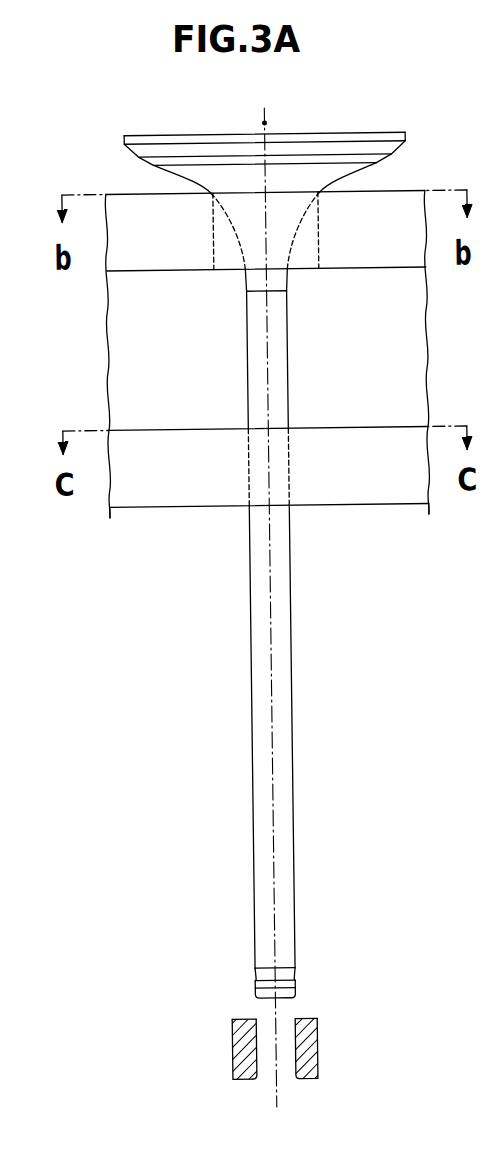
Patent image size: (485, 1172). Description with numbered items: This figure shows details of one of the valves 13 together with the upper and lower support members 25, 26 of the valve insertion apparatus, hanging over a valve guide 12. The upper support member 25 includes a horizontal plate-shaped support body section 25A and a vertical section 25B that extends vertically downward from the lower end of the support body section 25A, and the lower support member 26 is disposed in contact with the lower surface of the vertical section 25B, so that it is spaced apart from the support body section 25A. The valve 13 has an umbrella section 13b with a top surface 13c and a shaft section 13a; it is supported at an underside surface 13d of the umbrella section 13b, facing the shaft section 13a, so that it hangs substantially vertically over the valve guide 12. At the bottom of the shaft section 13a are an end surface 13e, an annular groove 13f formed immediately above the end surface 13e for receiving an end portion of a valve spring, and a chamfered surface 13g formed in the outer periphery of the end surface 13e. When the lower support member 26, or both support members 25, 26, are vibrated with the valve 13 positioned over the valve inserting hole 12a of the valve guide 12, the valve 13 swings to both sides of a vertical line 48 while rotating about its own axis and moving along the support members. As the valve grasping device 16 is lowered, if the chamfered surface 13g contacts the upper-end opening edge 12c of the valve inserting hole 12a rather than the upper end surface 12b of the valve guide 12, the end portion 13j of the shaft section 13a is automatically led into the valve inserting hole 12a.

The valve guide 12 is at (281, 1065).
The valve inserting hole 12a is at (278, 1068).
The upper end surface 12b is at (232, 1017).
The upper-end opening edge 12c is at (282, 1014).
The valve 13 is at (304, 538).
The shaft section 13a is at (284, 728).
The umbrella section 13b is at (407, 139).
The top surface of valve head 13c is at (220, 134).
The underside surface 13d is at (345, 178).
The end surface 13e is at (278, 1001).
The annular groove 13f is at (286, 972).
The chamfered surface 13g is at (243, 996).
The end portion 13j is at (281, 956).
The valve grasping device 16 is at (350, 514).
The upper support member 25 is at (234, 340).
The support body section 25A is at (127, 259).
The vertical section 25B is at (119, 332).
The lower support member 26 is at (149, 492).
The vertical line 48 is at (267, 121).